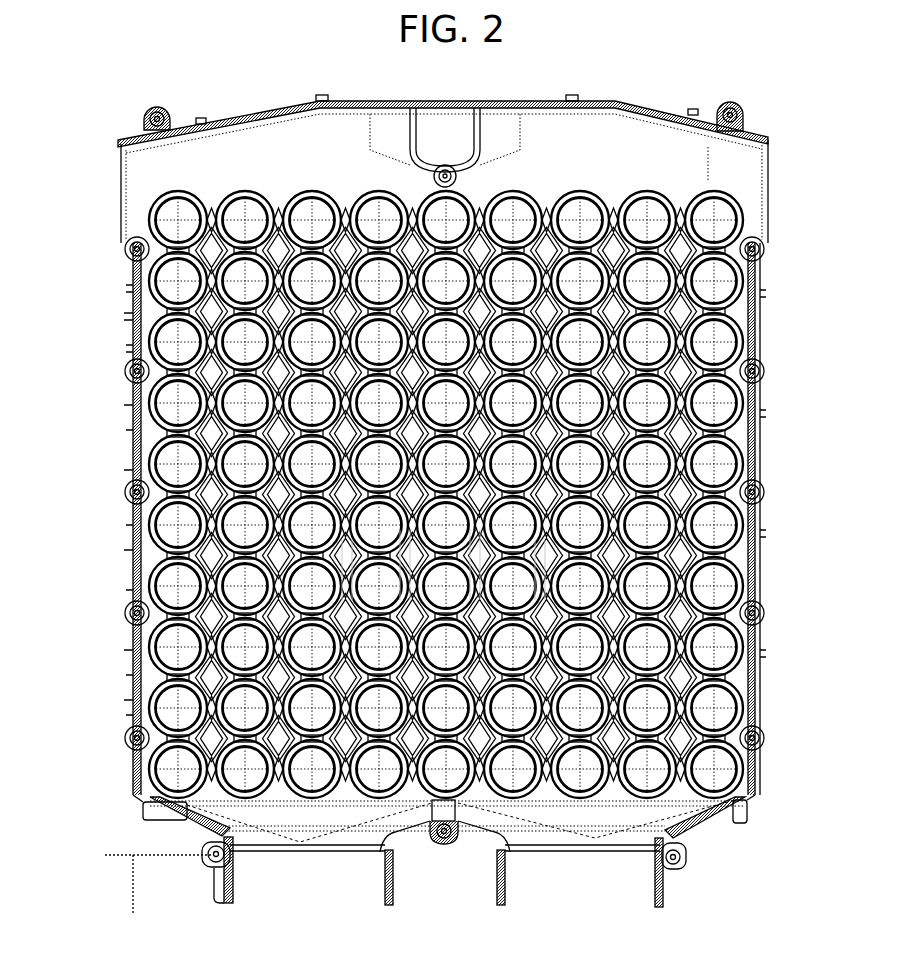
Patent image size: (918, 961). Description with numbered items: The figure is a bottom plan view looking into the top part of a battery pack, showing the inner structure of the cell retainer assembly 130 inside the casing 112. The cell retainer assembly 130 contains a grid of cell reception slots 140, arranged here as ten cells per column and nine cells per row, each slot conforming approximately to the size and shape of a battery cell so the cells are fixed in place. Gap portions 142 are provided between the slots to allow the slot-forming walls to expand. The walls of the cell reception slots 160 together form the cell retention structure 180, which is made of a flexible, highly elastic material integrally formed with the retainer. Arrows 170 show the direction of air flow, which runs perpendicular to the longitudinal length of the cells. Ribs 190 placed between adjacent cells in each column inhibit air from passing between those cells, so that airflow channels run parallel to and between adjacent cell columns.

The casing 112 is at (757, 138).
The cell retainer assembly 130 is at (100, 205).
The cell reception slot 140 is at (303, 205).
The gap portion 142 is at (190, 371).
The cell reception slots 160 is at (387, 883).
The arrows 170 is at (342, 570).
The cell retention structure 180 is at (738, 330).
The rib 190 is at (563, 560).